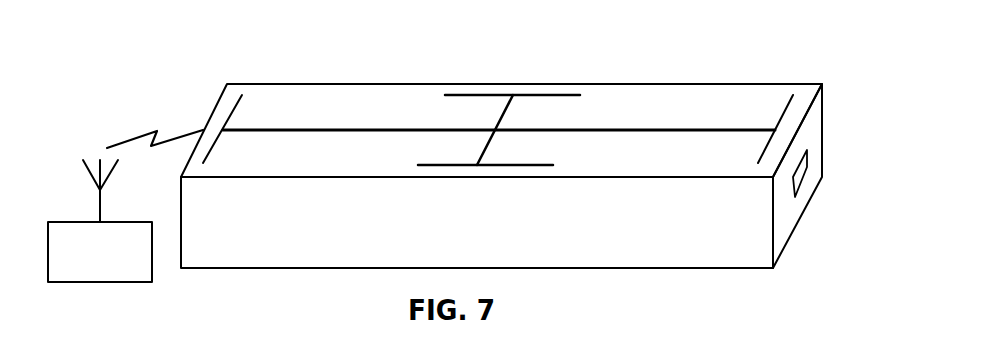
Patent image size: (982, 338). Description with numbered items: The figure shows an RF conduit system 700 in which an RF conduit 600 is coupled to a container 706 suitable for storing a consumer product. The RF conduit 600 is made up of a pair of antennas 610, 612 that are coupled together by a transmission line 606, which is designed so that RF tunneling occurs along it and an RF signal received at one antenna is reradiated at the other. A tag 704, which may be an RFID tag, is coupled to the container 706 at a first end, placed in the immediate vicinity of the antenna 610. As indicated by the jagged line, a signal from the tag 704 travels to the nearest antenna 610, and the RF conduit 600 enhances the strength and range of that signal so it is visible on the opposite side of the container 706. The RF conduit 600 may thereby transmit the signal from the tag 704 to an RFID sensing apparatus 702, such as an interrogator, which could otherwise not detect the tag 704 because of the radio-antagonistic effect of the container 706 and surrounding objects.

The RF conduit system 700 is at (168, 110).
The RFID sensing apparatus 702 is at (118, 264).
The tag 704 is at (803, 172).
The container 706 is at (517, 242).
The RF conduit 600 is at (400, 110).
The transmission line 606 is at (692, 129).
The antenna 610 is at (788, 130).
The antenna 612 is at (232, 108).